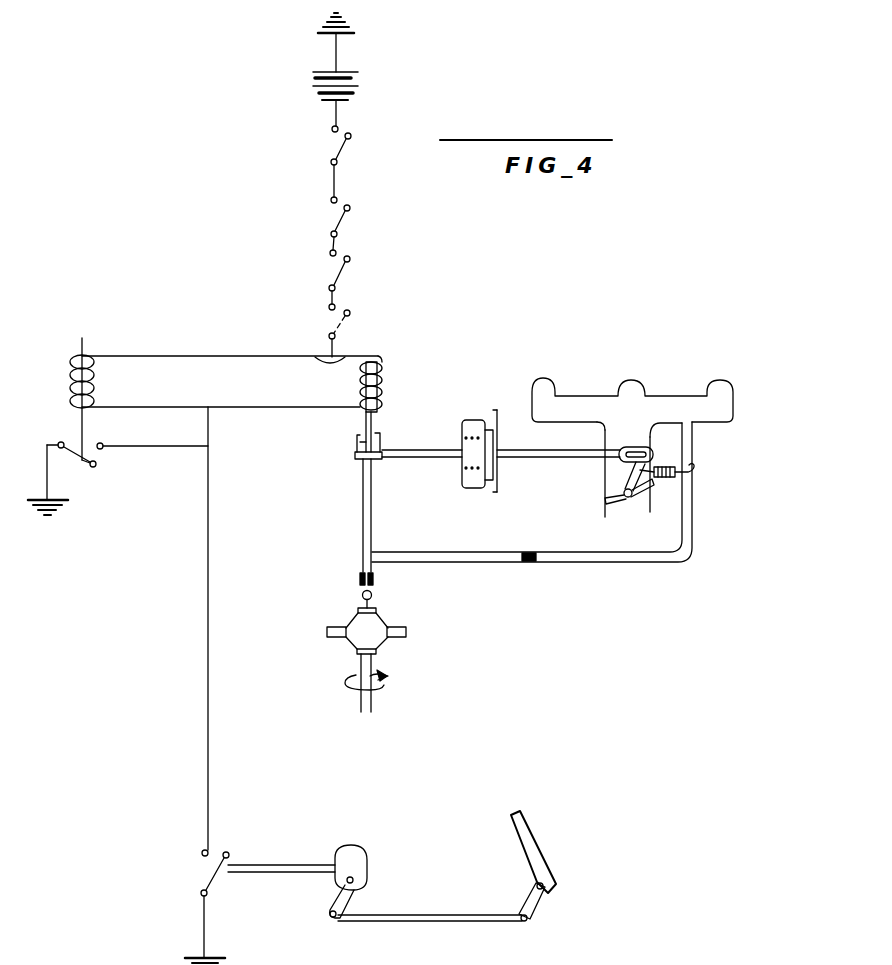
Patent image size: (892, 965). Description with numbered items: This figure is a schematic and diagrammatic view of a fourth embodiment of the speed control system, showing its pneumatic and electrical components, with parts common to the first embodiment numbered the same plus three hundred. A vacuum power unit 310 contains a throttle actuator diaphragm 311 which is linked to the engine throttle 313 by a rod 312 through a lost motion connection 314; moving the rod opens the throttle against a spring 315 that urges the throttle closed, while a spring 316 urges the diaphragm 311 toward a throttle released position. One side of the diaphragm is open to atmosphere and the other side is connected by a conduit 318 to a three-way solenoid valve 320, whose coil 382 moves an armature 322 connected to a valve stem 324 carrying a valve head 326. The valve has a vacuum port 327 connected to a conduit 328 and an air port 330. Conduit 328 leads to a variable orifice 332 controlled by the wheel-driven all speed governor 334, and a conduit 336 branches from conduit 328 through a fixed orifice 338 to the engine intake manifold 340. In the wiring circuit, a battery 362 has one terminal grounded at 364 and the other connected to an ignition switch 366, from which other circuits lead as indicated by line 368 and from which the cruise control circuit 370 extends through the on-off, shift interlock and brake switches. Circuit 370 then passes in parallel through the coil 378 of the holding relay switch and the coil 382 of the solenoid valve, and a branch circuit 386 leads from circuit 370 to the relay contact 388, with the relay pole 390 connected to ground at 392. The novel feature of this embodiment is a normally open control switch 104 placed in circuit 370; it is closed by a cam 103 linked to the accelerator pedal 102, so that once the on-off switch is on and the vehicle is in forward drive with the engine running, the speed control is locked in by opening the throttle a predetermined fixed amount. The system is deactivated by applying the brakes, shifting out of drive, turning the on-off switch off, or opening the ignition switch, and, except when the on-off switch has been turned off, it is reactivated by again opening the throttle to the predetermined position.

The ground 364 is at (352, 23).
The battery 362 is at (357, 87).
The ignition switch 366 is at (341, 152).
The line 368 is at (333, 173).
The cruise control circuit line 370 is at (330, 292).
The coil 378 is at (94, 374).
The contact 388 is at (101, 443).
The branch circuit 386 is at (137, 447).
The pole 390 is at (76, 470).
The ground 392 is at (47, 516).
The coil 382 is at (360, 368).
The armature 322 is at (382, 377).
The valve stem 324 is at (374, 418).
The air port 330 is at (376, 431).
The three-way solenoid valve 320 is at (356, 426).
The valve head 326 is at (376, 451).
The vacuum port 327 is at (363, 467).
The conduit 318 is at (402, 458).
The conduit 328 is at (362, 510).
The vacuum power unit 310 is at (475, 410).
The throttle actuator diaphragm 311 is at (494, 440).
The rod 312 is at (532, 456).
The spring 316 is at (471, 473).
The lost motion connection 314 is at (632, 448).
The engine throttle 313 is at (612, 506).
The spring 315 is at (663, 468).
The engine intake manifold 340 is at (718, 414).
The conduit 336 is at (689, 530).
The fixed orifice 338 is at (527, 551).
The variable orifice 332 is at (374, 595).
The wheel-driven all speed governor 334 is at (345, 649).
The control switch 104 is at (218, 866).
The cam 103 is at (360, 857).
The accelerator pedal 102 is at (530, 836).